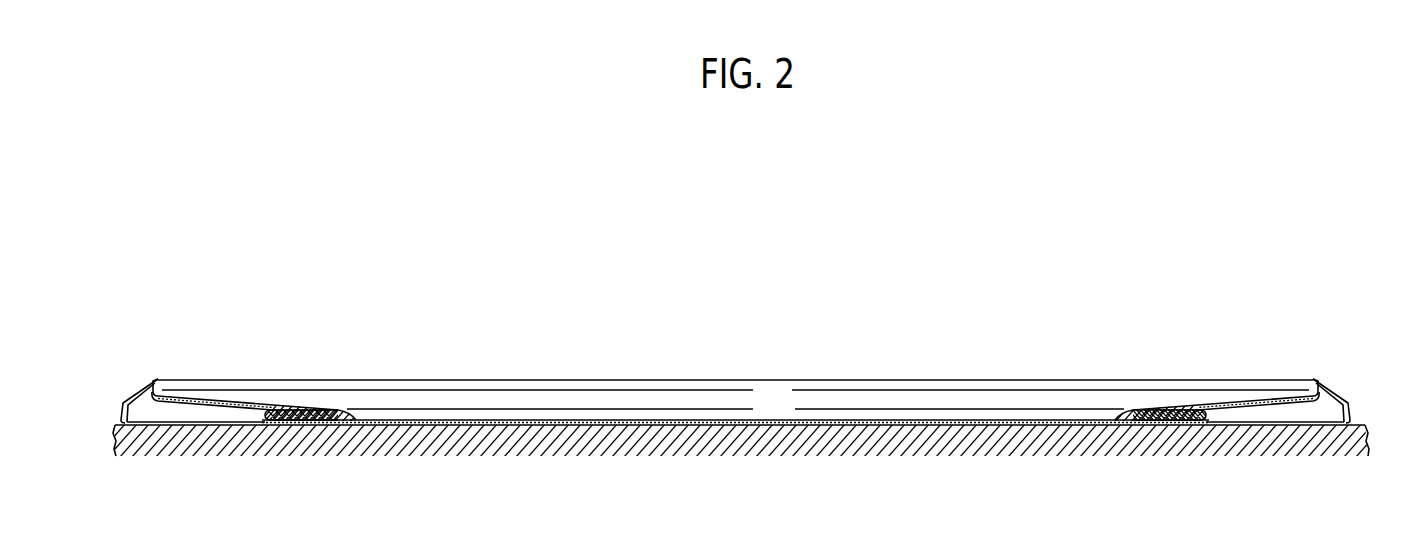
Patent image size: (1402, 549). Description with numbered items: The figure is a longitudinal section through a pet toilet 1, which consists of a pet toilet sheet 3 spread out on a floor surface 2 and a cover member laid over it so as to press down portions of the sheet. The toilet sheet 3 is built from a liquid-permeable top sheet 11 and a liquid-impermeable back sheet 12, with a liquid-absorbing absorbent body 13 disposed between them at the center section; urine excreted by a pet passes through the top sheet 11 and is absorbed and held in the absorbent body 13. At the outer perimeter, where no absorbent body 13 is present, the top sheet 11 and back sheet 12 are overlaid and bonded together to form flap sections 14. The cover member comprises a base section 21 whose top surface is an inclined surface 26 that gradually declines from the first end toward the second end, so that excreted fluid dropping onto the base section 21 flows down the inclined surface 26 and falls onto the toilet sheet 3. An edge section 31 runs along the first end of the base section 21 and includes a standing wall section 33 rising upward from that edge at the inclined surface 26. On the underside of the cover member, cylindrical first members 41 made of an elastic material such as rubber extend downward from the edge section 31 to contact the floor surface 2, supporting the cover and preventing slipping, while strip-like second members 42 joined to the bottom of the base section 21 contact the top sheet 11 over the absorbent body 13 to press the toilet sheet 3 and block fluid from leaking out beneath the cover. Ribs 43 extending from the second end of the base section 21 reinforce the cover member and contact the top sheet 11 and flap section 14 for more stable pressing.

The pet toilet 1 is at (849, 300).
The floor surface 2 is at (668, 437).
The pet toilet sheet 3 is at (928, 409).
The top sheet 11 is at (852, 420).
The back sheet 12 is at (834, 426).
The absorbent body 13 is at (791, 420).
The flap section 14 is at (252, 425).
The base section 21 is at (250, 391).
The inclined surface 26 is at (210, 397).
The edge section 31 is at (133, 378).
The standing wall section 33 is at (158, 386).
The first member 41 is at (158, 428).
The second member 42 is at (308, 409).
The rib 43 is at (228, 418).